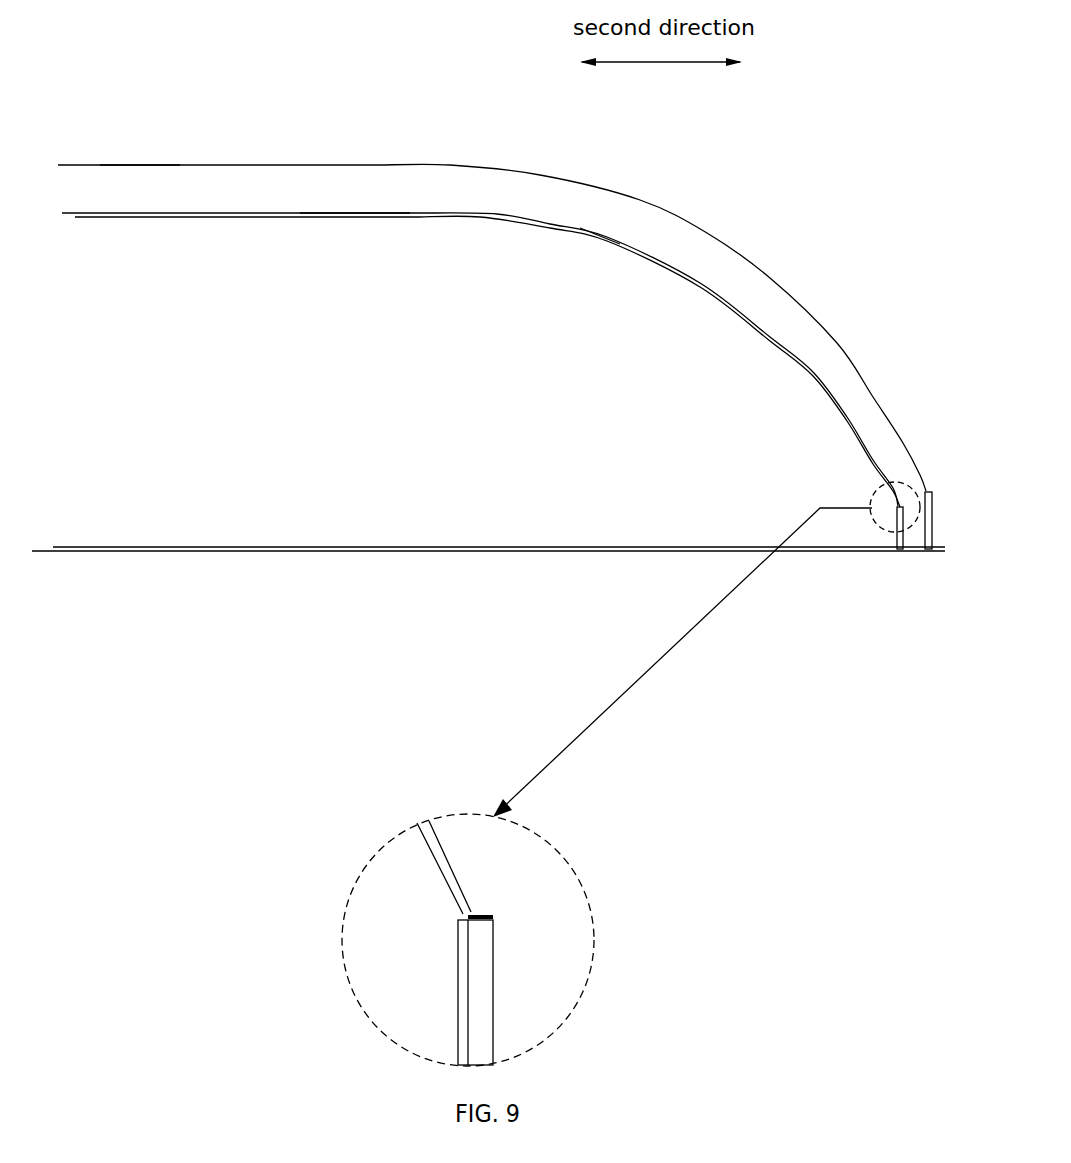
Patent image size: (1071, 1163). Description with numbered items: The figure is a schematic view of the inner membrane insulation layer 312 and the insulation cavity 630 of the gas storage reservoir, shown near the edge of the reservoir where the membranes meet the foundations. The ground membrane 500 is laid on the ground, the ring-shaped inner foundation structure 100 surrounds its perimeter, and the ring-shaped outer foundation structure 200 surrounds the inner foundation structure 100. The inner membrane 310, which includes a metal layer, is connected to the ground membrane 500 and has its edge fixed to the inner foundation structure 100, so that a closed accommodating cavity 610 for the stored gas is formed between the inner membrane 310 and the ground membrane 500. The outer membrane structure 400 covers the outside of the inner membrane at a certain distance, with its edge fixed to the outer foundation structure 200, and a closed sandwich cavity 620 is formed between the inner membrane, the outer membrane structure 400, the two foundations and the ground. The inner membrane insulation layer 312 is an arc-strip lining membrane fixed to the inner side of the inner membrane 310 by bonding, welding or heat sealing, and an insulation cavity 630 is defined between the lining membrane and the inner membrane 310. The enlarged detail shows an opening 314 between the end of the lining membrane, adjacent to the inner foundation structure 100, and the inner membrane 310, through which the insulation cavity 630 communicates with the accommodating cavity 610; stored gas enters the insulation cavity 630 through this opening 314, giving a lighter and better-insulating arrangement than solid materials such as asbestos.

The inner foundation structure 100 is at (898, 549).
The outer foundation structure 200 is at (929, 550).
The inner membrane 310 is at (224, 213).
The inner membrane insulation layer 312 is at (360, 215).
The openings 314 is at (452, 925).
The outer membrane structure 400 is at (445, 165).
The ground membrane 500 is at (288, 549).
The accommodating cavity 610 is at (603, 268).
The sandwich cavity 620 is at (140, 190).
The insulation cavity 630 is at (400, 190).